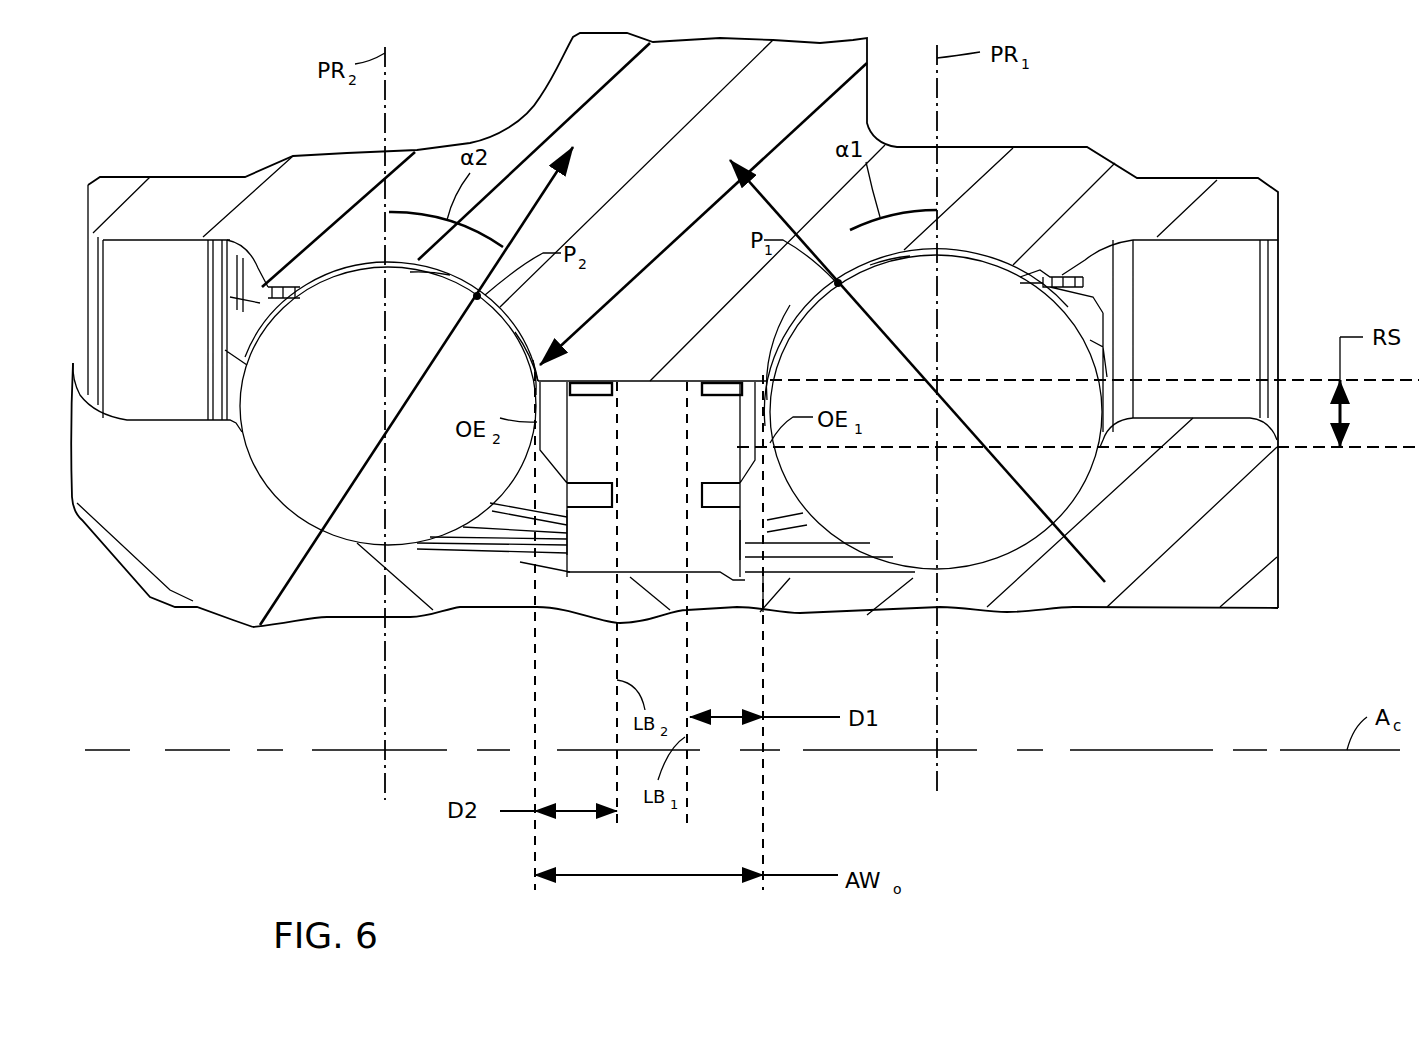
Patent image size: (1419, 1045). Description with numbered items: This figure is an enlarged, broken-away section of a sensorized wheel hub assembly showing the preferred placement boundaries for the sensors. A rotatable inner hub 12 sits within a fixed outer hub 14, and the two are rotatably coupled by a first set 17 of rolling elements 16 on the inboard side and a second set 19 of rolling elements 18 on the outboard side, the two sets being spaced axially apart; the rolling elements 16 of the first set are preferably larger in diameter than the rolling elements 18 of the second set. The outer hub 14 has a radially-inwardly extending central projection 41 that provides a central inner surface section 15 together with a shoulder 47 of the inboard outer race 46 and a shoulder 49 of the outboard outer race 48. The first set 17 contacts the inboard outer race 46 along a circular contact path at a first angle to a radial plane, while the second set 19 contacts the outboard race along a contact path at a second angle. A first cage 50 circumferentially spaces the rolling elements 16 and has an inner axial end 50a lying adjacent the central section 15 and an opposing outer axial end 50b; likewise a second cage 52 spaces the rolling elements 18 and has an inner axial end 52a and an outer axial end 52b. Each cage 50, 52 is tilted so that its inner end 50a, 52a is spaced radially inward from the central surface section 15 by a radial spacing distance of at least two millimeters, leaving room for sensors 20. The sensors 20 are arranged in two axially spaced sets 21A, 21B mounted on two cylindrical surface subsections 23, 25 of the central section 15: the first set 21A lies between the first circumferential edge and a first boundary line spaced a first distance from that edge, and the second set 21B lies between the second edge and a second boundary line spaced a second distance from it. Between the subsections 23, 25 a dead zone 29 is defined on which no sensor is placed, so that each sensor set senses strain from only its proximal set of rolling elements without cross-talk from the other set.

The inner hub 12 is at (1267, 683).
The outer hub 14 is at (1152, 112).
The central inner surface section 15 is at (659, 372).
The rolling elements 16 is at (1000, 540).
The first set of rolling elements 17 is at (1030, 278).
The rolling elements 18 is at (275, 495).
The second set of rolling elements 19 is at (330, 287).
The sensors 20 is at (600, 503).
The first set of sensors 21A is at (725, 376).
The second set of sensors 21B is at (592, 376).
The cylindrical surface subsection 23 is at (708, 448).
The cylindrical surface subsection 25 is at (603, 477).
The dead zone 29 is at (655, 555).
The central projection 41 is at (532, 368).
The inboard outer race 46 is at (891, 266).
The shoulder 47 is at (770, 337).
The outboard outer race 48 is at (427, 283).
The shoulder 49 is at (530, 333).
The first cage 50 is at (943, 452).
The inner axial end 50a is at (742, 530).
The outer axial end 50b is at (1097, 308).
The second cage 52 is at (379, 442).
The inner axial end 52a is at (568, 512).
The outer axial end 52b is at (234, 335).